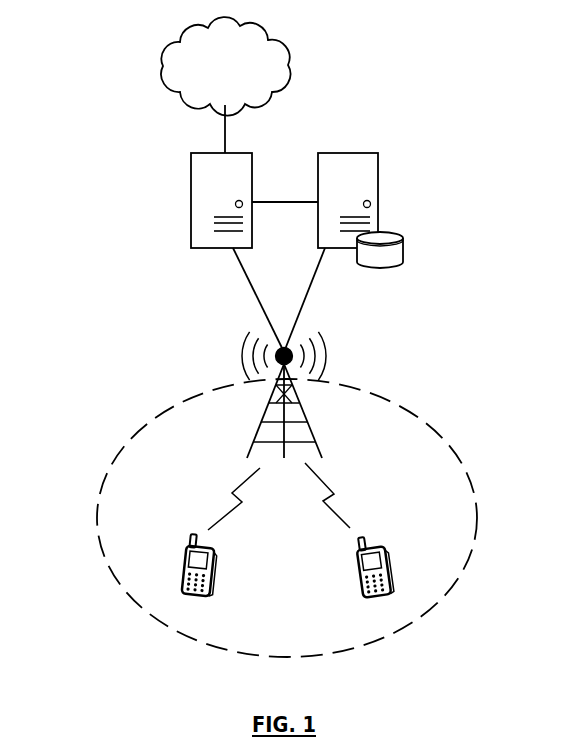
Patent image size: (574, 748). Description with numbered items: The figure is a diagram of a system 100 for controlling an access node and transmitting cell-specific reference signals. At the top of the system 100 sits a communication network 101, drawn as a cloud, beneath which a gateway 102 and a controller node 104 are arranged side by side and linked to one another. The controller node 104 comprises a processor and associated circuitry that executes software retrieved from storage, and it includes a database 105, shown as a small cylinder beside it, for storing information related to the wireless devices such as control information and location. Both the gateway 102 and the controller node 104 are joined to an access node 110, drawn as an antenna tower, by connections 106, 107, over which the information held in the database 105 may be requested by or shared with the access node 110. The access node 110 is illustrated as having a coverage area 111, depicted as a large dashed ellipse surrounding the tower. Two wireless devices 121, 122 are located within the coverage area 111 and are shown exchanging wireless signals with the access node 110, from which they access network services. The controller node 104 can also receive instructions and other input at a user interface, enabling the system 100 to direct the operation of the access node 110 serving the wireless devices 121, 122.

The system 100 is at (339, 85).
The communication network 101 is at (245, 76).
The gateway 102 is at (191, 174).
The controller node 104 is at (378, 170).
The database 105 is at (403, 236).
The connection 106 is at (250, 284).
The connection 107 is at (313, 282).
The access node 110 is at (256, 440).
The coverage area 111 is at (128, 590).
The wireless device 121 is at (214, 583).
The wireless device 122 is at (389, 571).